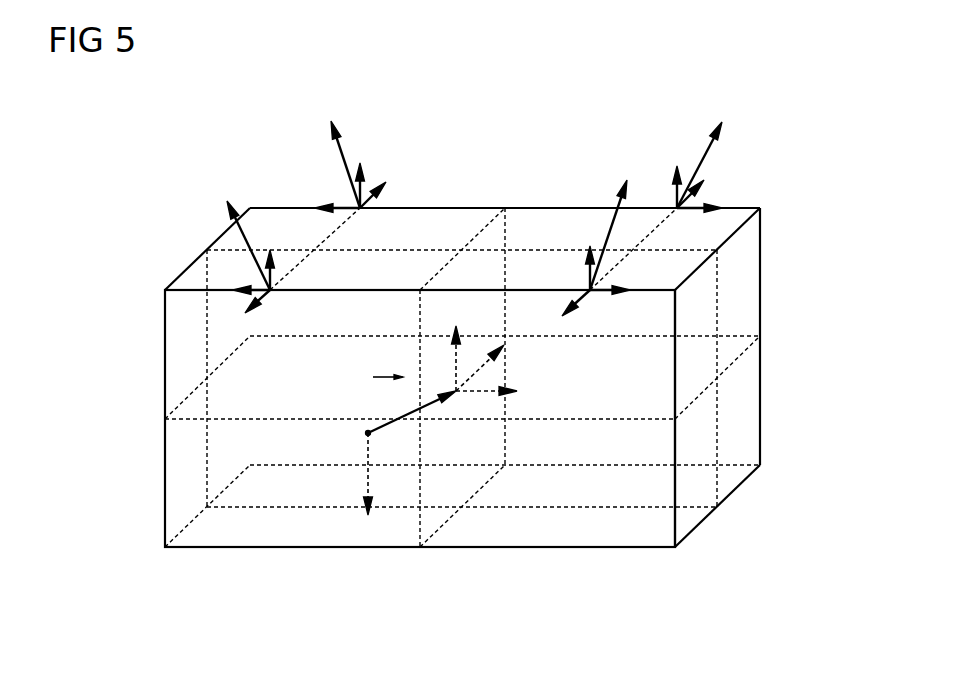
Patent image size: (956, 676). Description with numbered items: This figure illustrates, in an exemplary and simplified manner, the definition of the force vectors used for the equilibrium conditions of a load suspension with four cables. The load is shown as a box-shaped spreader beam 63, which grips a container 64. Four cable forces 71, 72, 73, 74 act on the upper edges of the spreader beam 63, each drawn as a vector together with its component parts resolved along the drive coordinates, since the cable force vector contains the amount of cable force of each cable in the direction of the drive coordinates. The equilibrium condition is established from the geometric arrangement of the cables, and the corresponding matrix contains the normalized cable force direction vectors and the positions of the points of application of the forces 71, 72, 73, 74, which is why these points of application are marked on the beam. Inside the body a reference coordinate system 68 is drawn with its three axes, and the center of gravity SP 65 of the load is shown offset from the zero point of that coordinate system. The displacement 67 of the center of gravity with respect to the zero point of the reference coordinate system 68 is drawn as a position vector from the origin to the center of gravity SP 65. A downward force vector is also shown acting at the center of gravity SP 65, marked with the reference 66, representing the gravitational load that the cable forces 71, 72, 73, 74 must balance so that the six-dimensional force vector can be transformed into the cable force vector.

The spreader beam 63 is at (483, 210).
The container 64 is at (748, 277).
The center of gravity SP 65 is at (368, 425).
The gravitational force vector FG 66 is at (367, 518).
The displacement of the center of gravity 67 is at (430, 408).
The reference coordinate system 68 is at (454, 397).
The force 71 is at (233, 198).
The force 72 is at (619, 188).
The force 73 is at (335, 120).
The force 74 is at (724, 132).